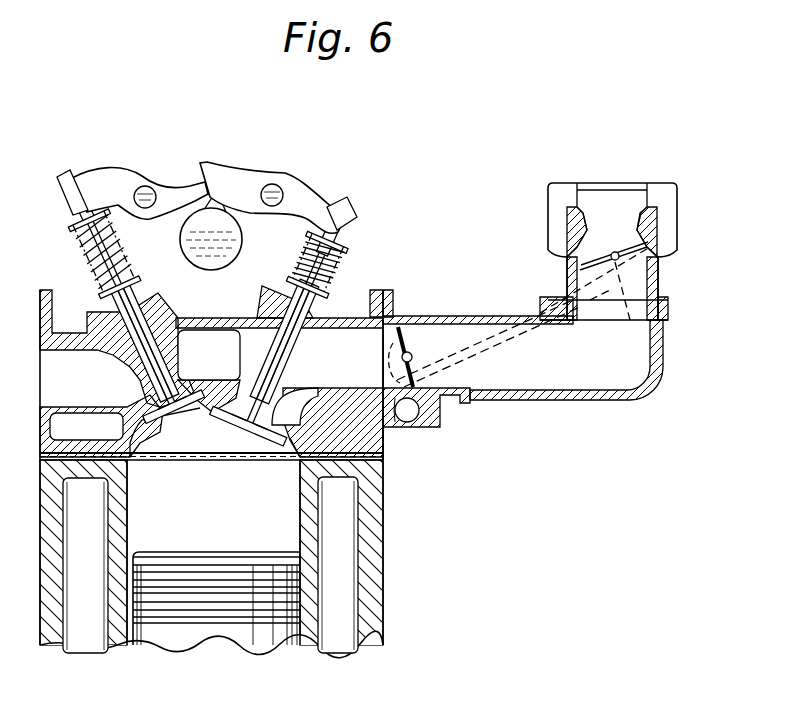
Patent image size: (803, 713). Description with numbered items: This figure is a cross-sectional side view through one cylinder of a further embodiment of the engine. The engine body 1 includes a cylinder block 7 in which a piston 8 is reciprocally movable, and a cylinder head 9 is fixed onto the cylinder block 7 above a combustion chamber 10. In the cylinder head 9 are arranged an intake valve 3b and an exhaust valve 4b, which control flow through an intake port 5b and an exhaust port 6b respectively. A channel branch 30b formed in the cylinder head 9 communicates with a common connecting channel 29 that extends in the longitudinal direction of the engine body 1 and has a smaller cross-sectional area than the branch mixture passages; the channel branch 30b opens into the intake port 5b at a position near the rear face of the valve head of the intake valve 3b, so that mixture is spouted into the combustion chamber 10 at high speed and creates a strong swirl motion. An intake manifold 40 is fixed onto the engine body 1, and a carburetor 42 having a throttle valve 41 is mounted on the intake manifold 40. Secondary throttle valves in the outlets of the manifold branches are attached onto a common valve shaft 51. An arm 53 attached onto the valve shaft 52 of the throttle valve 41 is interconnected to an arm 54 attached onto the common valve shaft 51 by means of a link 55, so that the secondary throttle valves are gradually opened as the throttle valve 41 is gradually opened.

The engine body 1 is at (383, 570).
The cylinder block 7 is at (325, 630).
The piston 8 is at (222, 634).
The cylinder head 9 is at (383, 455).
The combustion chamber 10 is at (222, 492).
The intake valve 3b is at (265, 322).
The exhaust valve 4b is at (165, 322).
The intake port 5b is at (354, 362).
The exhaust port 6b is at (101, 385).
The channel branch 30b is at (345, 396).
The common connecting channel 29 is at (412, 420).
The intake manifold 40 is at (595, 400).
The throttle valve 41 is at (660, 275).
The carburetor 42 is at (660, 200).
The common valve shaft 51 is at (410, 352).
The valve shaft 52 is at (615, 252).
The arm 53 is at (664, 333).
The arm 54 is at (375, 355).
The link 55 is at (466, 340).